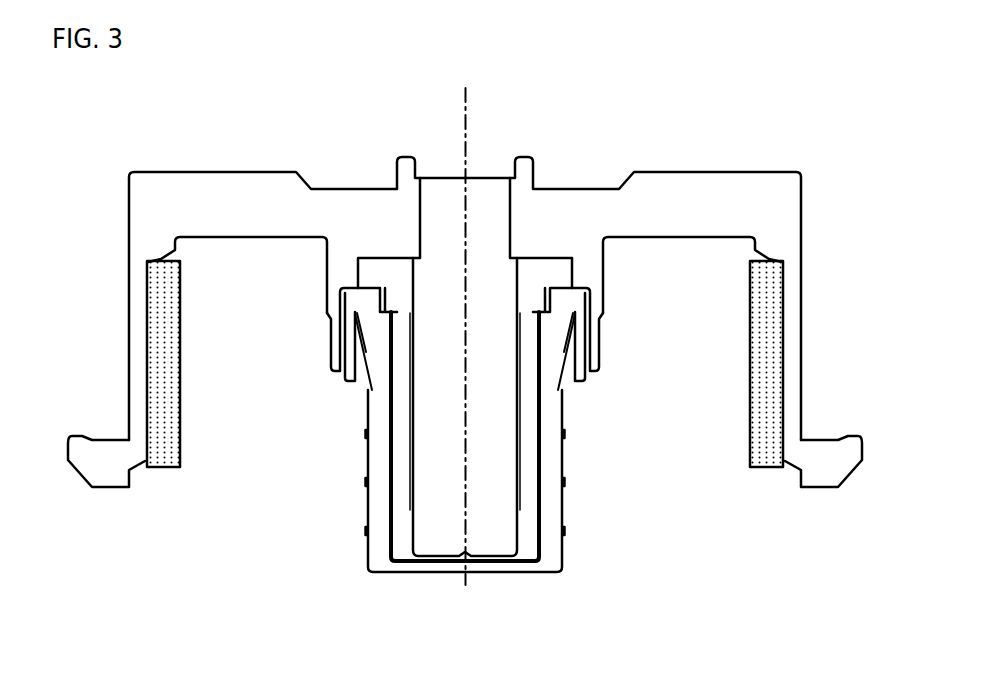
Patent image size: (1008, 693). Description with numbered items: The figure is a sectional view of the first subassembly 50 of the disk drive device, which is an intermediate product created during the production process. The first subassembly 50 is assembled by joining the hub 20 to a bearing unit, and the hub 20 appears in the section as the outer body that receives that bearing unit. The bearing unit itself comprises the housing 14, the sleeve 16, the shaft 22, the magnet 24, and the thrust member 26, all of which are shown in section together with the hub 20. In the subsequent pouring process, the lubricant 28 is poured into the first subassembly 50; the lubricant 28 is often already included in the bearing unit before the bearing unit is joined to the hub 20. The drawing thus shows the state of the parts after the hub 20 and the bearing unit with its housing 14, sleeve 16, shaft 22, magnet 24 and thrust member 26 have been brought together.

The housing 14 is at (377, 548).
The sleeve 16 is at (532, 517).
The hub 20 is at (157, 189).
The shaft 22 is at (488, 190).
The magnet 24 is at (163, 463).
The thrust member 26 is at (353, 297).
The lubricant 28 is at (370, 388).
The first subassembly 50 is at (483, 657).